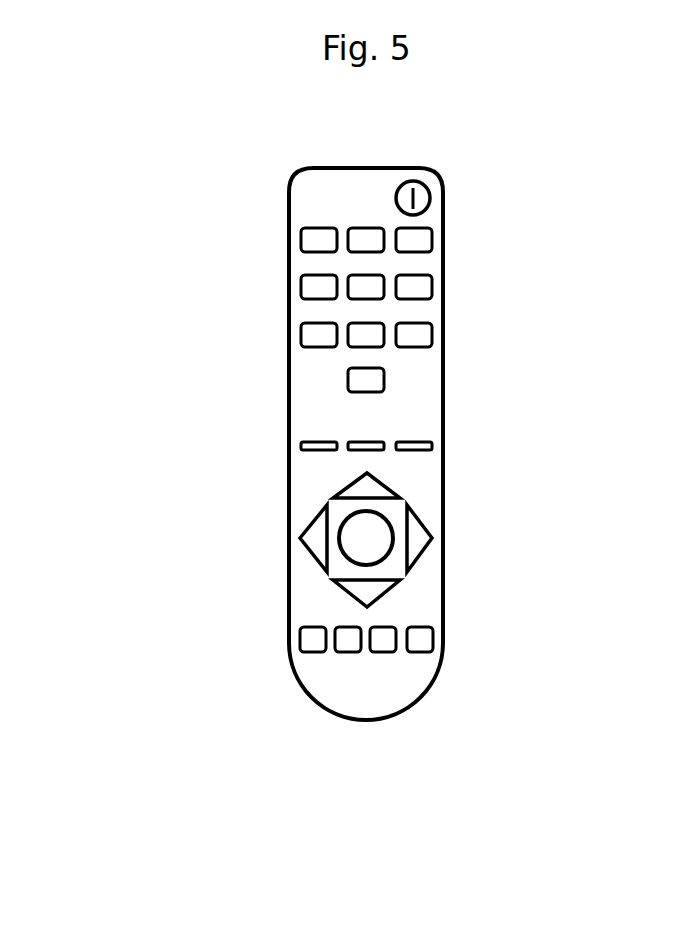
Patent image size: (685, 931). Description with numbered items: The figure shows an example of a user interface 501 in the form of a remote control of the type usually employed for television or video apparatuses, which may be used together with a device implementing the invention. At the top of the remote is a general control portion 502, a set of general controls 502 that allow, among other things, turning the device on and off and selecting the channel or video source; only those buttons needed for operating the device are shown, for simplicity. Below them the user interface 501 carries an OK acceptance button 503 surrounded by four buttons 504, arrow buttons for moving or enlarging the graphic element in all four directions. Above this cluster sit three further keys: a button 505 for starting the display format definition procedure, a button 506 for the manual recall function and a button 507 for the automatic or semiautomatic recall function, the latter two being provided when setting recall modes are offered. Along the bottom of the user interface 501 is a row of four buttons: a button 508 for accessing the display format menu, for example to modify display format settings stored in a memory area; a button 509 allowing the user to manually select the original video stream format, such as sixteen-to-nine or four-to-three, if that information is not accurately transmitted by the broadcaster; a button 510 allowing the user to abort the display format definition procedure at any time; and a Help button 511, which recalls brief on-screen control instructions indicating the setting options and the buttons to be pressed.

The user interface 501 is at (250, 252).
The general control portion 502 is at (460, 182).
The OK acceptance button 503 is at (393, 518).
The four buttons 504 is at (417, 536).
The button for starting the display format definition procedure 505 is at (315, 448).
The button for the manual recall function 506 is at (372, 440).
The button for the automatic/semiautomatic recall function 507 is at (415, 446).
The button for accessing the display format menu 508 is at (314, 653).
The button for manually selecting the original video stream format 509 is at (347, 652).
The abort button 510 is at (390, 653).
The Help button 511 is at (428, 634).